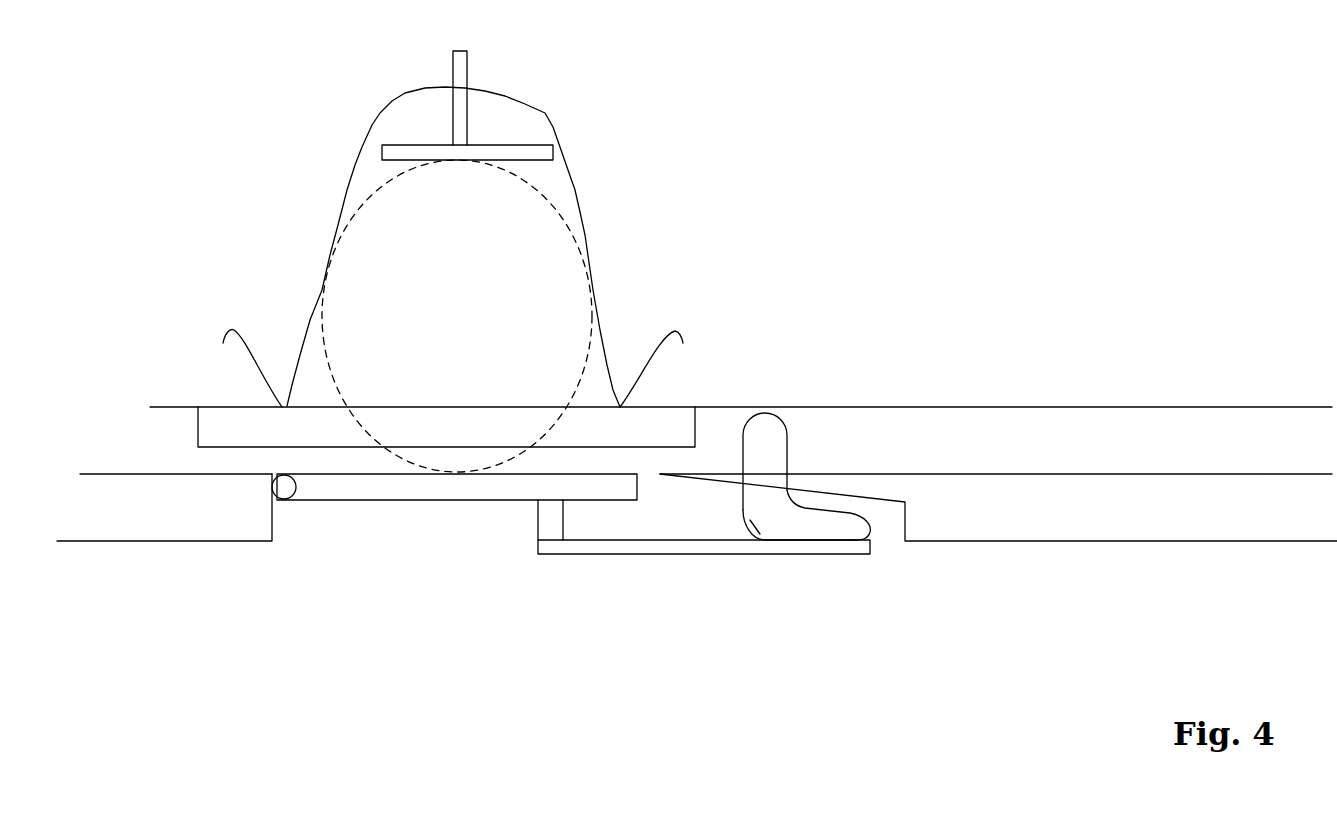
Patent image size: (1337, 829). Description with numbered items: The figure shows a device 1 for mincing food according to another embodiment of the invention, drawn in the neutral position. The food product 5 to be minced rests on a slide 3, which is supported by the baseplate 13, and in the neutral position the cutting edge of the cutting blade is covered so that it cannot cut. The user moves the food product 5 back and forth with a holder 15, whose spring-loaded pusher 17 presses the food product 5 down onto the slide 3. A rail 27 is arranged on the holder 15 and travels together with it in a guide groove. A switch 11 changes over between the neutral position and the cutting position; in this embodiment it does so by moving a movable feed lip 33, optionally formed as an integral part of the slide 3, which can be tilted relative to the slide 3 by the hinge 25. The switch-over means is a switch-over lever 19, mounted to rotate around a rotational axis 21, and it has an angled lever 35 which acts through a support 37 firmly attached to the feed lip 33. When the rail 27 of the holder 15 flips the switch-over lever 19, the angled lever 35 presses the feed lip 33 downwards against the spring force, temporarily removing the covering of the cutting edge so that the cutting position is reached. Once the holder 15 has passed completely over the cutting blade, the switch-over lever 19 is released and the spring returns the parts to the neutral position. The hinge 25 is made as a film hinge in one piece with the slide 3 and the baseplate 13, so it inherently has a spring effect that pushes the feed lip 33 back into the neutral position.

The device 1 is at (822, 150).
The slide 3 is at (117, 473).
The food product 5 is at (380, 240).
The switch 11 is at (737, 610).
The baseplate 13 is at (235, 507).
The holder 15 is at (574, 184).
The spring-loaded pusher 17 is at (463, 124).
The switch-over lever 19 is at (772, 443).
The rotational axis 21 is at (772, 513).
The hinge 25 is at (287, 490).
The rail 27 is at (686, 423).
The feed lip 33 is at (445, 488).
The angled lever 35 is at (838, 528).
The support 37 is at (630, 554).